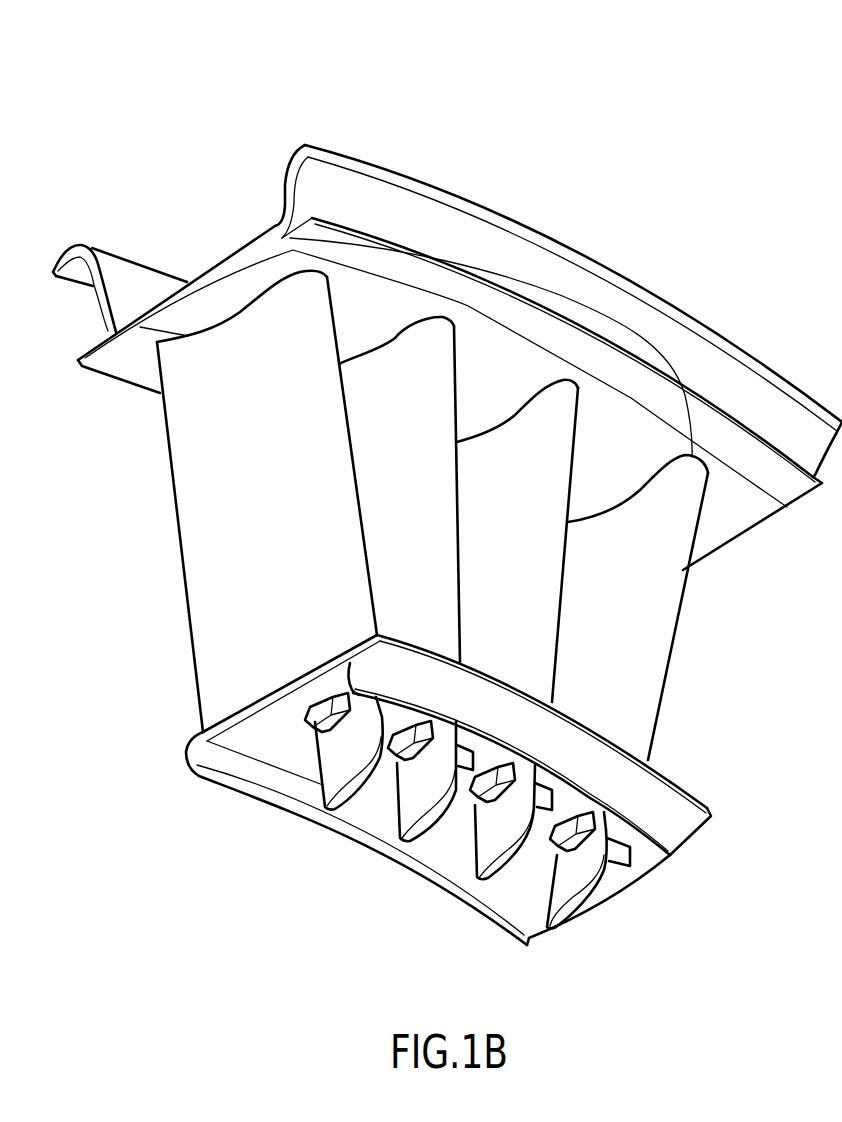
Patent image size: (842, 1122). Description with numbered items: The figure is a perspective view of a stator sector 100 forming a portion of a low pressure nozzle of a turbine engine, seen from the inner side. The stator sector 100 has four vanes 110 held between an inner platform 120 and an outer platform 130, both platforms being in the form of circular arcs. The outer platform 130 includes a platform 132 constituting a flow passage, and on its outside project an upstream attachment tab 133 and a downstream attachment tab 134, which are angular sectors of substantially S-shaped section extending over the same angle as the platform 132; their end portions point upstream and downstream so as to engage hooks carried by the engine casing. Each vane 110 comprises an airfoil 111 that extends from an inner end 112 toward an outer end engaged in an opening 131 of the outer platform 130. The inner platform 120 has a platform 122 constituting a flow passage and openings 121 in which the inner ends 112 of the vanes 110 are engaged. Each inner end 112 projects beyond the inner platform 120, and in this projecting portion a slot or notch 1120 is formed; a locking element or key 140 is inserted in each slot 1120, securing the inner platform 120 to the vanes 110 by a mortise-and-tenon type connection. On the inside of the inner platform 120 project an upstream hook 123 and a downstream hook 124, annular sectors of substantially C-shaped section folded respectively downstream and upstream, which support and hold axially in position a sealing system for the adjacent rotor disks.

The stator sector 100 is at (166, 87).
The vane 110 is at (382, 588).
The airfoil 111 is at (328, 523).
The inner end 112 is at (333, 770).
The slot or notch 1120 is at (343, 732).
The inner platform 120 is at (185, 720).
The opening 121 is at (360, 704).
The platform constituting a flow passage 122 is at (184, 752).
The upstream hook 123 is at (530, 944).
The downstream hook 124 is at (674, 853).
The outer platform 130 is at (203, 259).
The opening 131 is at (506, 293).
The platform constituting a flow passage 132 is at (90, 368).
The upstream attachment tab 133 is at (303, 152).
The downstream attachment tab 134 is at (72, 254).
The locking element or key 140 is at (318, 700).